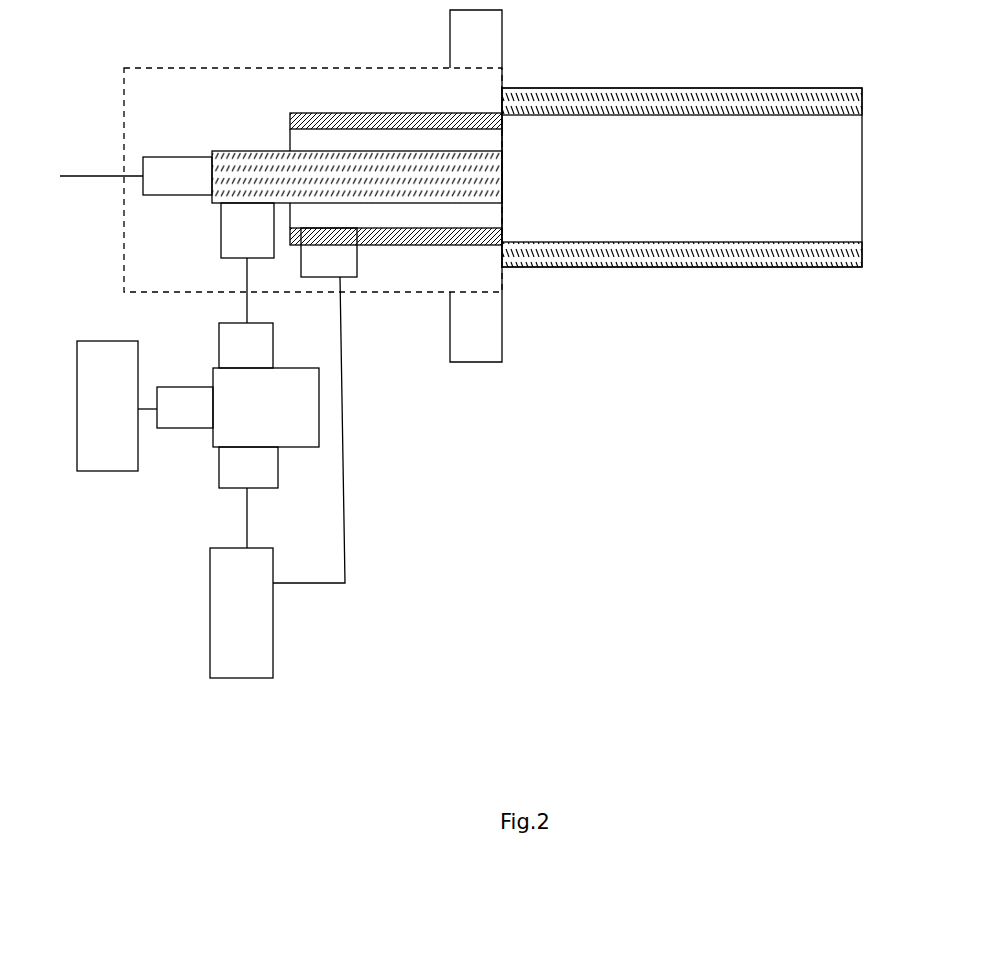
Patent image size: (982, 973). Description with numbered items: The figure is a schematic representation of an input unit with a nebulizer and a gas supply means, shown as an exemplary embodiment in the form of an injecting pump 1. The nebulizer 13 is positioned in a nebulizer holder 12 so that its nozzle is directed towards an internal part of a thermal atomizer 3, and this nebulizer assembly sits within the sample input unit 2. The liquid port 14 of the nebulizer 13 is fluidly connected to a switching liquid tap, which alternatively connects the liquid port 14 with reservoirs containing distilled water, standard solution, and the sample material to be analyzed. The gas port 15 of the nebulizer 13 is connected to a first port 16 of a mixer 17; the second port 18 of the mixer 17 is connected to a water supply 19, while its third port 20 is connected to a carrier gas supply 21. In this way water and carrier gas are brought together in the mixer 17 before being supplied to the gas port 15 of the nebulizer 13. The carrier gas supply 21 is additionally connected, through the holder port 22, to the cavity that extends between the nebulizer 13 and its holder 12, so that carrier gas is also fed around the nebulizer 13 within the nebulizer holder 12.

The injecting pump 1 is at (313, 180).
The sample input unit 2 is at (476, 186).
The thermal atomizer 3 is at (682, 177).
The nebulizer holder 12 is at (304, 115).
The nebulizer 13 is at (357, 177).
The liquid port 14 is at (136, 176).
The gas port 15 is at (247, 263).
The first port 16 is at (246, 345).
The mixer 17 is at (266, 407).
The second port 18 is at (175, 407).
The water supply 19 is at (107, 406).
The third port 20 is at (248, 497).
The carrier gas supply 21 is at (241, 613).
The holder port 22 is at (315, 405).